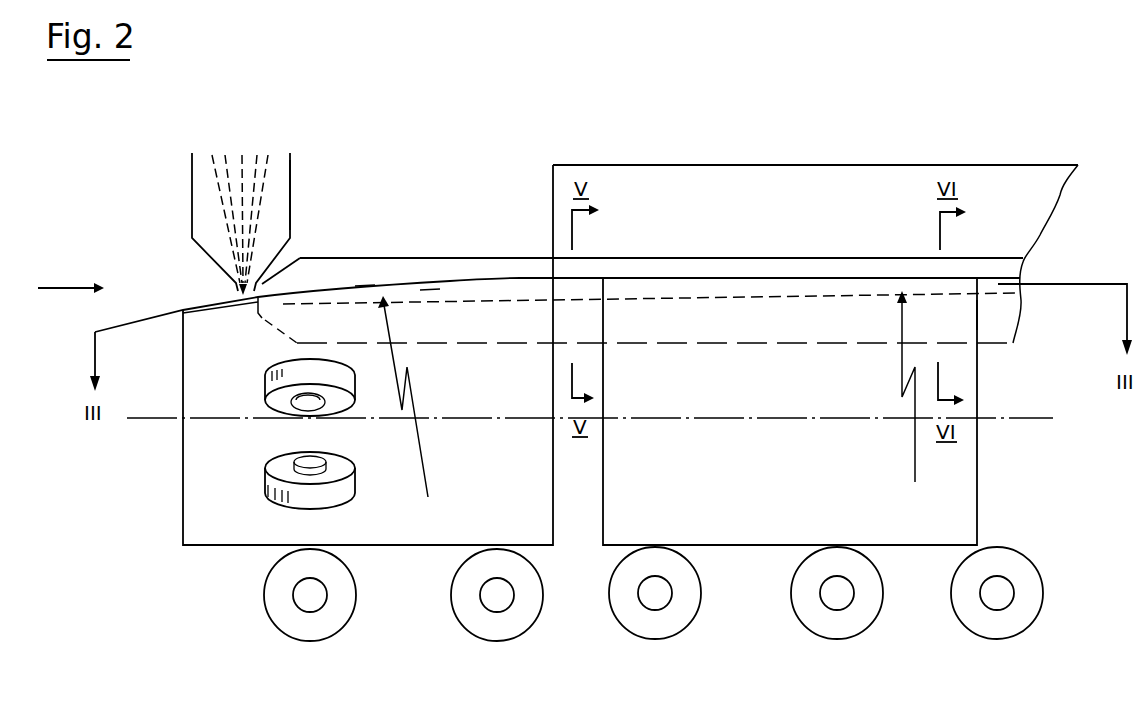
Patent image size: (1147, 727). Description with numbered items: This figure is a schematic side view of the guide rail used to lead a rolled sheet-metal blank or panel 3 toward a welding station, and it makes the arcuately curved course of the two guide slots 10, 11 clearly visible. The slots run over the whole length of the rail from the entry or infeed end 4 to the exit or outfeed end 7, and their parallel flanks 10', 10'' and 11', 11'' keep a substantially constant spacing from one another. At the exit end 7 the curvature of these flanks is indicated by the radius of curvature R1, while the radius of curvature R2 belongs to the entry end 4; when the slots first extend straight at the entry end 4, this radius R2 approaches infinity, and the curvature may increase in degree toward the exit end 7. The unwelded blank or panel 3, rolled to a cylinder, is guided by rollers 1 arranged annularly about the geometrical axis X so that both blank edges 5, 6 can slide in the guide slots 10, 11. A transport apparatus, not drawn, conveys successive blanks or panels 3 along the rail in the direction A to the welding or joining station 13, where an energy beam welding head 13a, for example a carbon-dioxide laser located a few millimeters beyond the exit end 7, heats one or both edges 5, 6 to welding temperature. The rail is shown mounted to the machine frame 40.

The rollers 1 is at (267, 397).
The blank or panel 3 is at (380, 548).
The entry or infeed end 4 is at (977, 323).
The blank or panel edge 5 is at (557, 346).
The blank or panel edge 6 is at (203, 309).
The exit or outfeed end 7 is at (262, 318).
The guide slot 10 is at (650, 243).
The guide slot 11 is at (650, 243).
The guide slot flank 10' is at (437, 239).
The guide slot flank 11' is at (437, 239).
The guide slot flank 10'' is at (377, 234).
The guide slot flank 11'' is at (377, 234).
The welding or joining station 13 is at (176, 185).
The energy beam welding head 13a is at (291, 173).
The machine frame 40 is at (690, 165).
The radius of curvature R1 is at (403, 396).
The radius of curvature R2 is at (914, 386).
The geometrical axis X is at (1042, 418).
The direction A is at (71, 277).